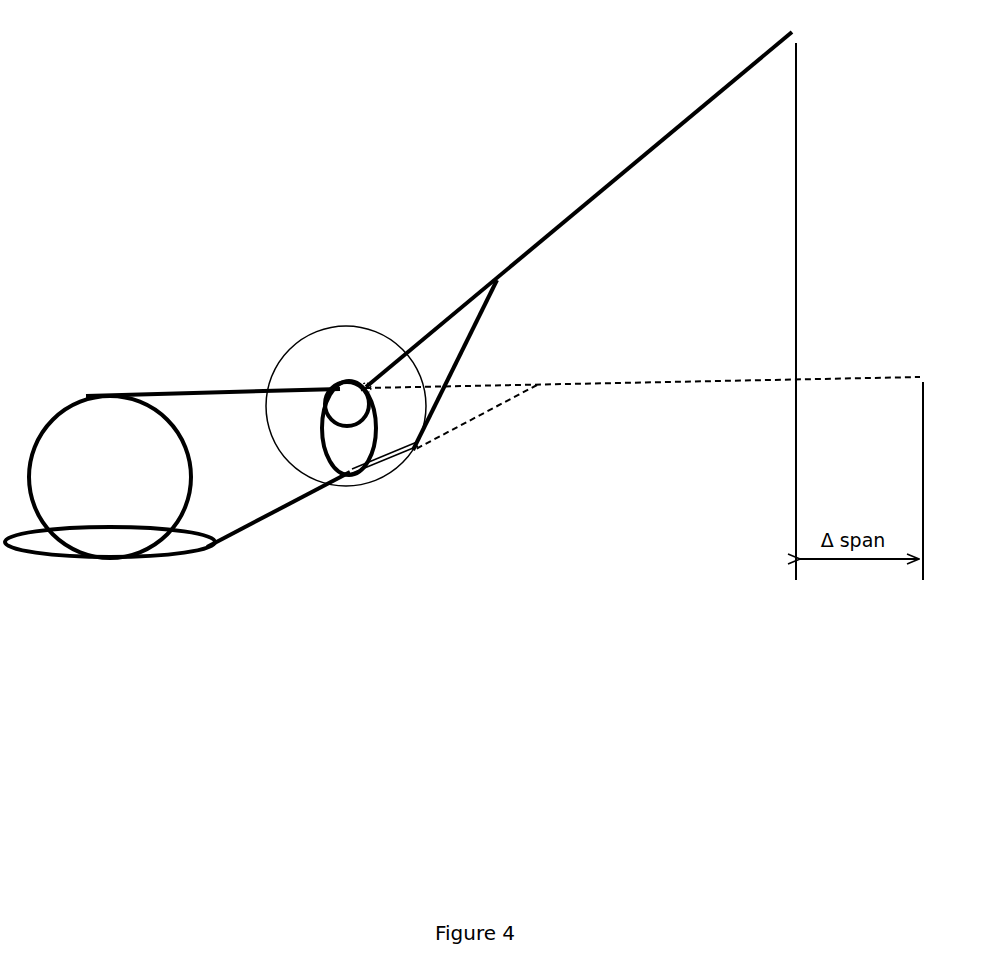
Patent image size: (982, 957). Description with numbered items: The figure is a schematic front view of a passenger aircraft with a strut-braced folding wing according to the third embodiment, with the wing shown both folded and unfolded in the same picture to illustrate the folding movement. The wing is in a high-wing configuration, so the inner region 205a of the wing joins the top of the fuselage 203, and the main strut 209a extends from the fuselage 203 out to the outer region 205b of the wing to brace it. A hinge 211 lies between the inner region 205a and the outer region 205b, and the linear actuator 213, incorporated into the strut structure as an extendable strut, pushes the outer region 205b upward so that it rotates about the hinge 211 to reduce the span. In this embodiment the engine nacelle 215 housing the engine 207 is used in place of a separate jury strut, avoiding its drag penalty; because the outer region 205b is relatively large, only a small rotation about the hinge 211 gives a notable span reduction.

The fuselage 203 is at (110, 477).
The inner region of the wing 205a is at (167, 390).
The outer region of the wing 205b is at (660, 132).
The engine 207 is at (315, 363).
The main strut 209a is at (290, 505).
The hinge 211 is at (366, 384).
The linear actuator 213 is at (403, 458).
The engine nacelle 215 is at (378, 405).